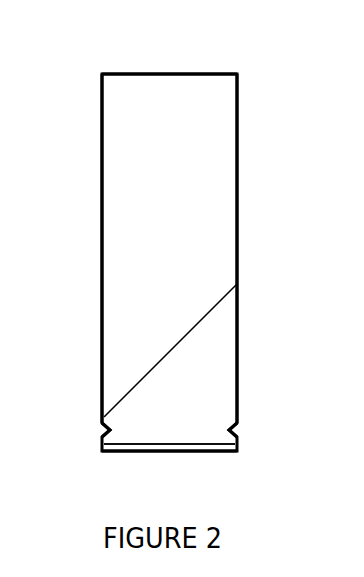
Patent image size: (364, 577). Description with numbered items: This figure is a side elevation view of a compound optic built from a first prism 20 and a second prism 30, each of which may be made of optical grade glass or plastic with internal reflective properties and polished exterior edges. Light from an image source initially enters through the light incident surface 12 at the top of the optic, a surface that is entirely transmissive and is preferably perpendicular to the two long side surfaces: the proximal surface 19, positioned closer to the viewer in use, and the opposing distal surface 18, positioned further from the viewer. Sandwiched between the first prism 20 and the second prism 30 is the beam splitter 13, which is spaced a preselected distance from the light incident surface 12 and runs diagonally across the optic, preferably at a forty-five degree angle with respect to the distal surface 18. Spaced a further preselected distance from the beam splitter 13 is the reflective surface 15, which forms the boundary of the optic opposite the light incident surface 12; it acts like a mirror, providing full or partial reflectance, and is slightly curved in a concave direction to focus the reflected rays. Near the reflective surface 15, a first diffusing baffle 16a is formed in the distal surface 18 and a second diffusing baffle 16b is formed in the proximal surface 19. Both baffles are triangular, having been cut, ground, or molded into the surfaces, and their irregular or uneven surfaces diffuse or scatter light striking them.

The light incident surface 12 is at (180, 72).
The beam splitter 13 is at (160, 362).
The reflective surface 15 is at (165, 453).
The first diffusing baffle 16a is at (93, 428).
The second diffusing baffle 16b is at (255, 425).
The distal surface 18 is at (102, 123).
The proximal surface 19 is at (237, 140).
The first prism 20 is at (183, 232).
The second prism 30 is at (196, 403).